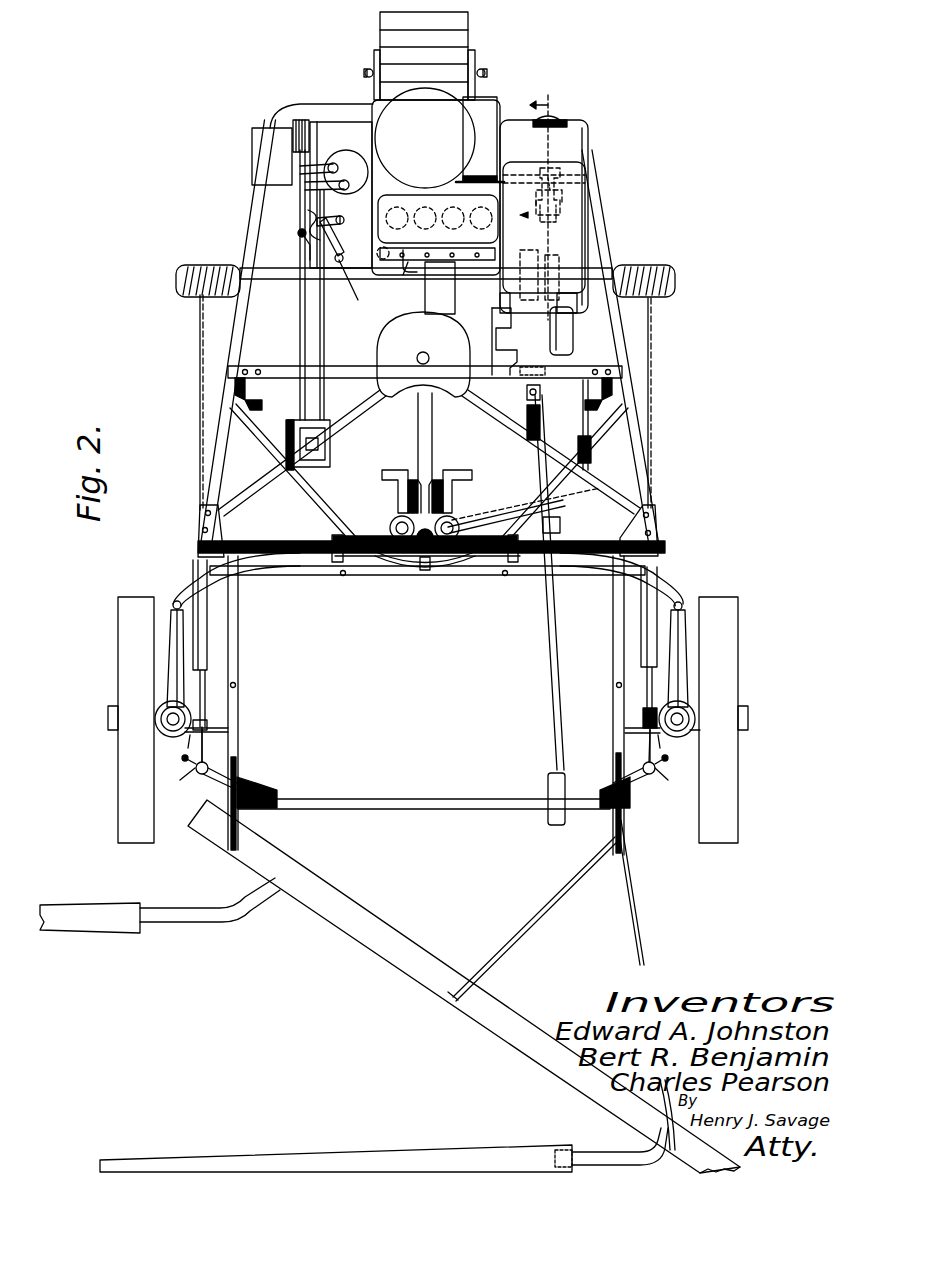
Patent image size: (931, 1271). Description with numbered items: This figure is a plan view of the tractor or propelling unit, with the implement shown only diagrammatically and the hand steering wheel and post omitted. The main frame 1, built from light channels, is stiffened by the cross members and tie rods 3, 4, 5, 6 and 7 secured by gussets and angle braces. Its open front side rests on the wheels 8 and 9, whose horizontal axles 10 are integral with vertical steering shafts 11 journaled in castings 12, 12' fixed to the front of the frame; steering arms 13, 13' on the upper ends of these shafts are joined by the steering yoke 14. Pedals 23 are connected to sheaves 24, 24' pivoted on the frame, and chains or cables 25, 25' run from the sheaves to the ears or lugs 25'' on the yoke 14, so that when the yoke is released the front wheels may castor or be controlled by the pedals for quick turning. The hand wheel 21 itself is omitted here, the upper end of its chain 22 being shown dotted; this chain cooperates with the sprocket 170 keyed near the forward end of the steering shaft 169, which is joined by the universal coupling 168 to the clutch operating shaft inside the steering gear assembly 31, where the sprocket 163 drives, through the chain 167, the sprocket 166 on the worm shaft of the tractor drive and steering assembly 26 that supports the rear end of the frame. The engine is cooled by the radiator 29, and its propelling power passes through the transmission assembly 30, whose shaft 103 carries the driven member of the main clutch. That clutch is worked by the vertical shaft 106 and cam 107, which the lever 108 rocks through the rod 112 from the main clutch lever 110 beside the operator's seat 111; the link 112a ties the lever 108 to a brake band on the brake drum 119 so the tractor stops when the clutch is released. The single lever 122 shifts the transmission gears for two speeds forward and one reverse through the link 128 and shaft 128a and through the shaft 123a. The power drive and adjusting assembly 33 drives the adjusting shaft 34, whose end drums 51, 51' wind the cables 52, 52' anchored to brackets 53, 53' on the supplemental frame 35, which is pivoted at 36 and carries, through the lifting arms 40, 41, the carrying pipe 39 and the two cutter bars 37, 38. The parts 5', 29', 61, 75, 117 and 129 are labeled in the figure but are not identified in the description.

The main frame 1 is at (252, 230).
The cross member and tie rod 3 is at (281, 366).
The cross member and tie rod 4 is at (255, 515).
The cross member and tie rod 5 is at (429, 453).
The rod 5' is at (424, 744).
The cross member and tie rod 6 is at (490, 462).
The cross member and tie rod 7 is at (448, 290).
The wheel 8 is at (738, 602).
The wheel 9 is at (120, 606).
The horizontal axle 10 is at (182, 735).
The vertical steering shaft 11 is at (414, 763).
The casting 12 is at (662, 702).
The casting 12' is at (186, 695).
The steering arm 13 is at (628, 640).
The steering arm 13' is at (220, 640).
The steering yoke 14 is at (280, 565).
The hand wheel 21 is at (416, 285).
The chain and sprocket connection 22 is at (488, 525).
The pedal 23 is at (458, 448).
The sheave 24 is at (454, 491).
The sheave 24' is at (380, 497).
The chain or cable 25 is at (426, 521).
The chain or cable 25' is at (354, 516).
The ears or lugs 25'' is at (425, 583).
The tractor drive and steering assembly 26 is at (462, 30).
The radiator 29 is at (558, 231).
The control shaft 29' is at (406, 453).
The transmission assembly 30 is at (340, 150).
The steering gear assembly 31 is at (575, 140).
The power drive and adjusting assembly 33 is at (497, 335).
The adjusting shaft 34 is at (344, 298).
The supplemental frame 35 is at (614, 712).
The pivotal connection 36 is at (248, 410).
The cutter bar 37 is at (545, 695).
The cutter bar 38 is at (95, 932).
The carrying pipe 39 is at (380, 950).
The lifting arm 40 is at (628, 838).
The lifting arm 41 is at (250, 810).
The drum 51 is at (197, 264).
The drum 51' is at (647, 262).
The chain or cable 52 is at (185, 402).
The chain or cable 52' is at (656, 403).
The bracket 53 is at (201, 768).
The bracket 53' is at (640, 770).
The rod 61 is at (578, 428).
The bracket 75 is at (528, 398).
The shaft 103 is at (319, 216).
The short vertical shaft 106 is at (352, 285).
The clutch operating cam 107 is at (342, 225).
The lever 108 is at (301, 230).
The main clutch lever 110 is at (290, 445).
The operator's seat 111 is at (392, 262).
The rod or link 112 is at (302, 330).
The link 112a is at (300, 150).
The box 117 is at (258, 160).
The brake drum 119 is at (298, 122).
The lever 122 is at (312, 462).
The shaft 123a is at (335, 162).
The link 128 is at (325, 395).
The shaft 128a is at (346, 180).
The rod 129 is at (325, 330).
The sprocket 163 is at (548, 175).
The sprocket 166 is at (480, 180).
The chain 167 is at (528, 175).
The universal coupling 168 is at (556, 210).
The steering shaft 169 is at (566, 502).
The sprocket 170 is at (598, 482).